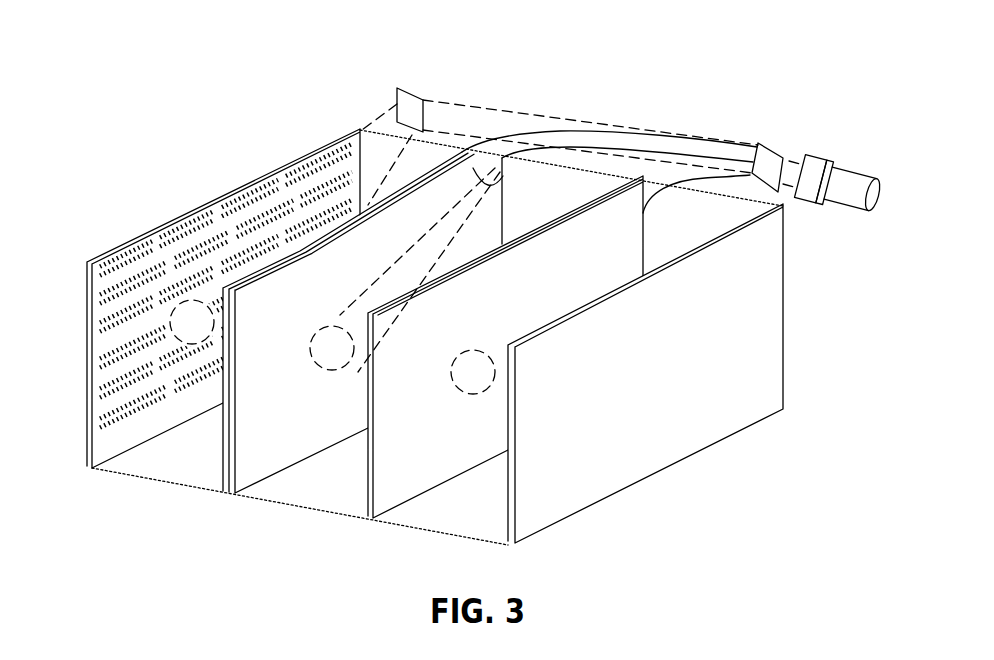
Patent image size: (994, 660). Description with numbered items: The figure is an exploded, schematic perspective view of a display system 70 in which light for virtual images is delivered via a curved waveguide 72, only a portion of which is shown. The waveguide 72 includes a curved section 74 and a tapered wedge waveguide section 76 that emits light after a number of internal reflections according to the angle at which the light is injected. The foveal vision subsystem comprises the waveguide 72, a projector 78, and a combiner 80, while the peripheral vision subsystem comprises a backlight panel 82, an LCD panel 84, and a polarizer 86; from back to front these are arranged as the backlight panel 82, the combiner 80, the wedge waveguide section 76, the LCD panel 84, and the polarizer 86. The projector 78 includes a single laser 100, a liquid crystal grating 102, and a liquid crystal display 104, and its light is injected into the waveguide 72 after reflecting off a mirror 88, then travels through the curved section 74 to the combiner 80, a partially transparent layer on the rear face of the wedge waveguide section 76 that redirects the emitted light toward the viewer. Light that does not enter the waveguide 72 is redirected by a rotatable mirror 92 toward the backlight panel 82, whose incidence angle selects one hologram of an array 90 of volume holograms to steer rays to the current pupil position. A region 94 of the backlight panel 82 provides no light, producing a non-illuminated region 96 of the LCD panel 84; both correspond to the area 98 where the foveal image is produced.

The display system 70 is at (643, 92).
The curved waveguide 72 is at (612, 131).
The curved section 74 is at (678, 133).
The wedge waveguide section 76 is at (503, 182).
The projector 78 is at (852, 183).
The combiner 80 is at (223, 496).
The backlight panel 82 is at (205, 298).
The LCD panel 84 is at (367, 504).
The polarizer 86 is at (507, 533).
The mirror 88 is at (770, 143).
The array of volume holograms 90 is at (270, 186).
The rotatable mirror 92 is at (397, 90).
The region of the backlight panel 94 is at (187, 343).
The non-illuminated region 96 is at (464, 394).
The area 98 is at (326, 370).
The laser 100 is at (860, 210).
The liquid crystal grating 102 is at (833, 158).
The liquid crystal display 104 is at (805, 203).